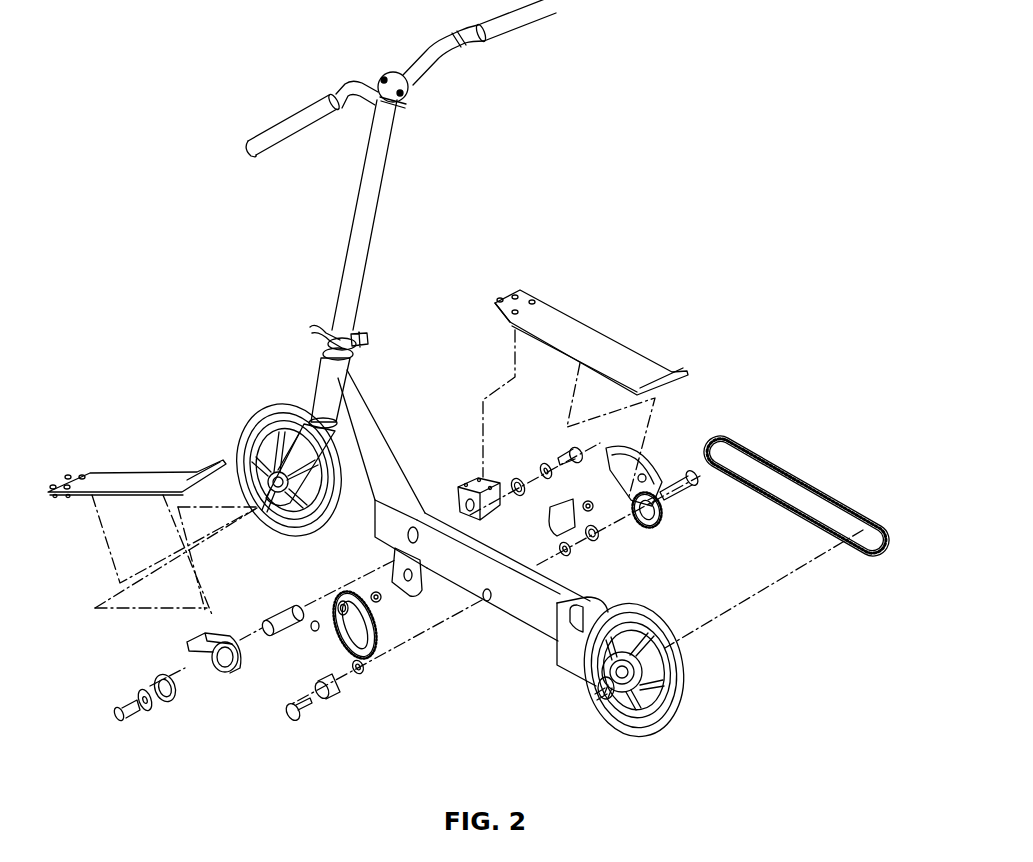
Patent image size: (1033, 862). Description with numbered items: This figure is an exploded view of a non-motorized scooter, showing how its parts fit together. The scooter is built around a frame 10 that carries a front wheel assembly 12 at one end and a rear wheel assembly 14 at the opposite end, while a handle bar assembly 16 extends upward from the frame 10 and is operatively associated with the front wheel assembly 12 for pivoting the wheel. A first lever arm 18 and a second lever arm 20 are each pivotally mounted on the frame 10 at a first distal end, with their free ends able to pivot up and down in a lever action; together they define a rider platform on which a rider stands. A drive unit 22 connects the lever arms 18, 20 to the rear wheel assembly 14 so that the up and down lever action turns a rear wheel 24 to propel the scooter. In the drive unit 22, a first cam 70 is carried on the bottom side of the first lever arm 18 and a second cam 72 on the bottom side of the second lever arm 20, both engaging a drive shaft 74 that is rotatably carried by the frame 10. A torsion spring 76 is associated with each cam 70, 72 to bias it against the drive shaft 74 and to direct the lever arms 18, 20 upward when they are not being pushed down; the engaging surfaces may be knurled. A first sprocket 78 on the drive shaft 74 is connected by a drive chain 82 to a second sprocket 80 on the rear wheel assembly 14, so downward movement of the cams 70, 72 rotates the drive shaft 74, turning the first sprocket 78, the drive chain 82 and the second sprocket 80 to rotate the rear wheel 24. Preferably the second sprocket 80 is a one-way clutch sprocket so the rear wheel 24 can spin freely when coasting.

The frame 10 is at (382, 432).
The front wheel assembly 12 is at (256, 398).
The rear wheel assembly 14 is at (598, 718).
The handle bar assembly 16 is at (404, 67).
The first lever arm 18 is at (135, 479).
The second lever arm 20 is at (612, 345).
The drive unit 22 is at (314, 715).
The rear wheel 24 is at (684, 680).
The first cam 70 is at (350, 640).
The second cam 72 is at (623, 455).
The drive shaft 74 is at (690, 470).
The torsion spring 76 is at (387, 596).
The first sprocket 78 is at (642, 527).
The second sprocket 80 is at (668, 640).
The drive chain 82 is at (772, 463).